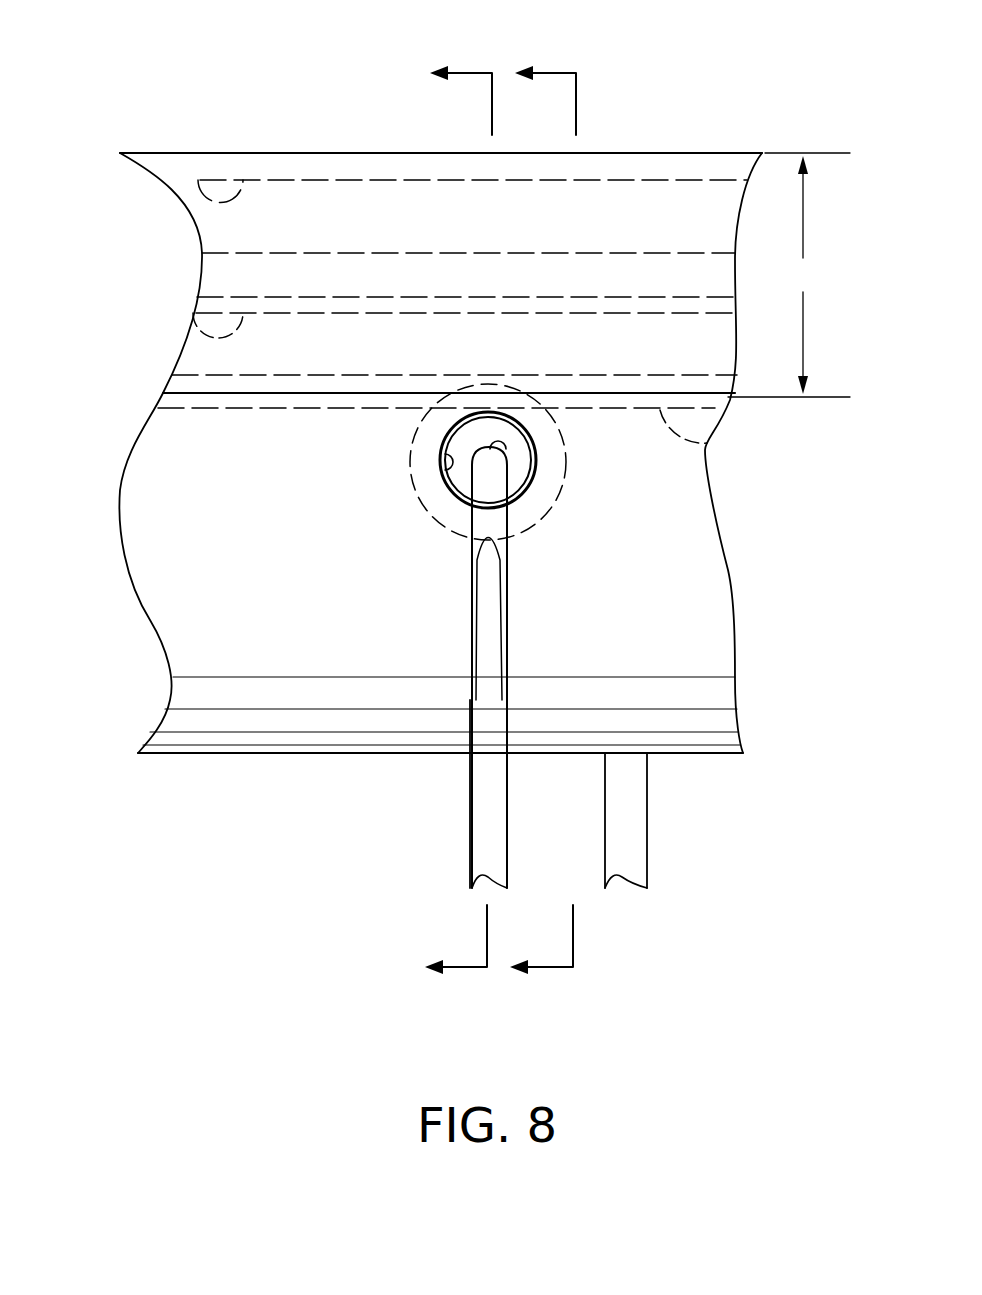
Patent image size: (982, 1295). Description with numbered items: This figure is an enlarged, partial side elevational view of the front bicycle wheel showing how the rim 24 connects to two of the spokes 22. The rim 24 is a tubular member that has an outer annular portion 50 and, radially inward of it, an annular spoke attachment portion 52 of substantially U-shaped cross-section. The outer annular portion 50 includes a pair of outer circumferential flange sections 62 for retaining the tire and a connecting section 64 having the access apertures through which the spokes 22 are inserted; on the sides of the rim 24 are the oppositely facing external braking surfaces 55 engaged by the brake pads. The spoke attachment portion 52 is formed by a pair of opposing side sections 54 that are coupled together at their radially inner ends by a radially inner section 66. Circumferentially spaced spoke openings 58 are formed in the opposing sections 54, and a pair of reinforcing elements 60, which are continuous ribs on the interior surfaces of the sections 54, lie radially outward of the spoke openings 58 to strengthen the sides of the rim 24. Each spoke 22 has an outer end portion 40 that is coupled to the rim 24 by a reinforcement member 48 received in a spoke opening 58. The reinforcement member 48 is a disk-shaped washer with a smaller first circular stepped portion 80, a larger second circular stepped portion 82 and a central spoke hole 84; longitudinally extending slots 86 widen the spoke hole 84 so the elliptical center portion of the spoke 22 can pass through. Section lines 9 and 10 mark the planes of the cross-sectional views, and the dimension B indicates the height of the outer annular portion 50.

The annular rim portion 24 is at (686, 130).
The outer annular portion 50 is at (375, 153).
The external braking surfaces 55 is at (407, 233).
The outer circumferential flange sections 62 is at (243, 180).
The connecting section 64 is at (180, 333).
The annular spoke attachment portion 52 is at (175, 462).
The reinforcing elements 60 is at (707, 443).
The opposing side sections 54 is at (178, 595).
The radially inner section 66 is at (258, 755).
The second circular stepped portion 82 is at (566, 457).
The spoke hole 84 is at (456, 428).
The reinforcement member 48 is at (527, 475).
The spoke openings 58 is at (443, 474).
The longitudinally extending slots 86 is at (506, 446).
The outer end portion 40 is at (473, 520).
The first circular stepped portion 80 is at (508, 480).
The spokes 22 is at (470, 812).
The section line 9 is at (458, 519).
The section line 10 is at (543, 519).
The dimension B is at (789, 275).